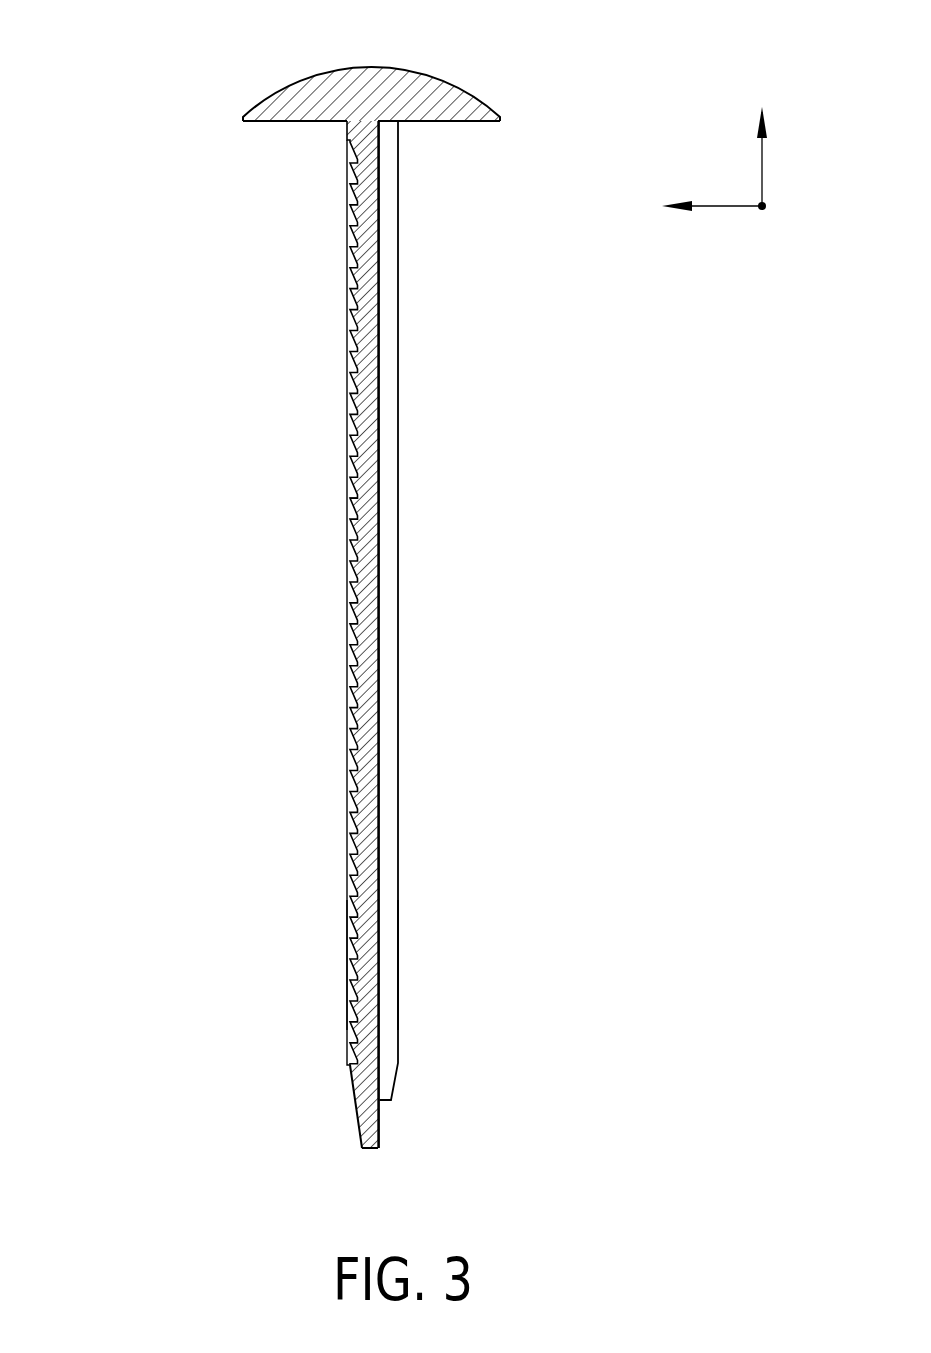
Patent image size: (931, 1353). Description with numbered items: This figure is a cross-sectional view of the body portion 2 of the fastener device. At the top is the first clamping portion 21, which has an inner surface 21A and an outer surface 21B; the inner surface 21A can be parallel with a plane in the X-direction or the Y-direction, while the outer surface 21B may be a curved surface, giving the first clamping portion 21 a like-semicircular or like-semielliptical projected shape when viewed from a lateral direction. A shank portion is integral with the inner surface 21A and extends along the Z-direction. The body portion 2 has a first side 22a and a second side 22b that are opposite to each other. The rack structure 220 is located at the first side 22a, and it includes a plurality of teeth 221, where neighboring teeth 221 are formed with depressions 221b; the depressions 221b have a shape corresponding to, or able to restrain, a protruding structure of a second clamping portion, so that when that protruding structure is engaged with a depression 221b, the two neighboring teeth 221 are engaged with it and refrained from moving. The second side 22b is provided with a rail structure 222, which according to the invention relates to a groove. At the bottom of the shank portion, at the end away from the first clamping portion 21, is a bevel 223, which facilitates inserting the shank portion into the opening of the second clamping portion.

The body portion 2 is at (76, 81).
The first clamping portion 21 is at (328, 92).
The inner surface 21A is at (458, 123).
The outer surface 21B is at (438, 78).
The rack structure 220 is at (280, 392).
The teeth 221 is at (353, 495).
The depressions 221b is at (353, 499).
The rail structure 222 is at (387, 503).
The first side 22a is at (347, 966).
The second side 22b is at (398, 966).
The bevel 223 is at (354, 1098).